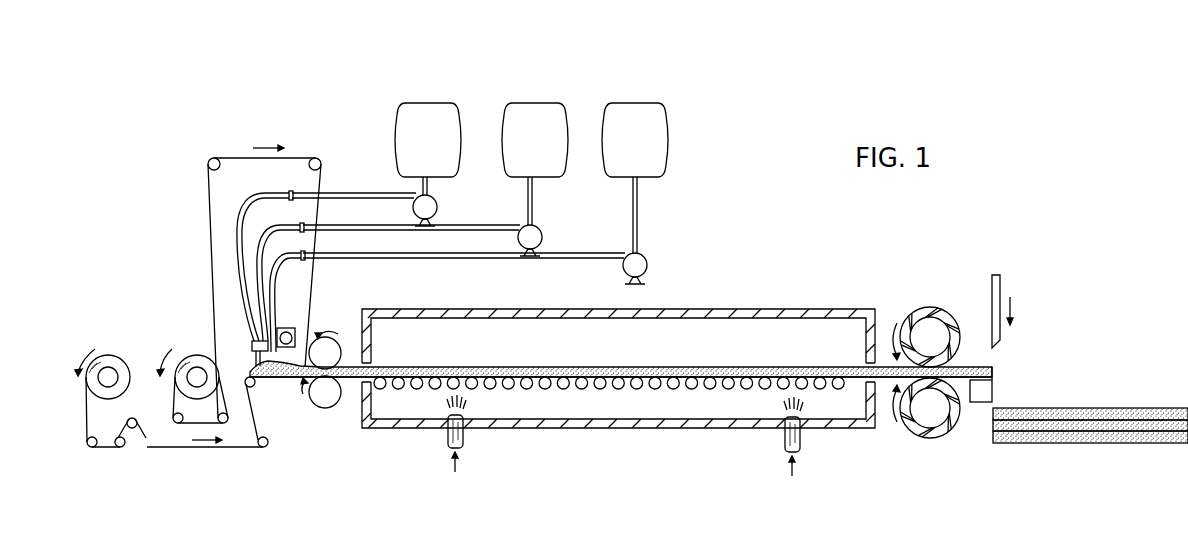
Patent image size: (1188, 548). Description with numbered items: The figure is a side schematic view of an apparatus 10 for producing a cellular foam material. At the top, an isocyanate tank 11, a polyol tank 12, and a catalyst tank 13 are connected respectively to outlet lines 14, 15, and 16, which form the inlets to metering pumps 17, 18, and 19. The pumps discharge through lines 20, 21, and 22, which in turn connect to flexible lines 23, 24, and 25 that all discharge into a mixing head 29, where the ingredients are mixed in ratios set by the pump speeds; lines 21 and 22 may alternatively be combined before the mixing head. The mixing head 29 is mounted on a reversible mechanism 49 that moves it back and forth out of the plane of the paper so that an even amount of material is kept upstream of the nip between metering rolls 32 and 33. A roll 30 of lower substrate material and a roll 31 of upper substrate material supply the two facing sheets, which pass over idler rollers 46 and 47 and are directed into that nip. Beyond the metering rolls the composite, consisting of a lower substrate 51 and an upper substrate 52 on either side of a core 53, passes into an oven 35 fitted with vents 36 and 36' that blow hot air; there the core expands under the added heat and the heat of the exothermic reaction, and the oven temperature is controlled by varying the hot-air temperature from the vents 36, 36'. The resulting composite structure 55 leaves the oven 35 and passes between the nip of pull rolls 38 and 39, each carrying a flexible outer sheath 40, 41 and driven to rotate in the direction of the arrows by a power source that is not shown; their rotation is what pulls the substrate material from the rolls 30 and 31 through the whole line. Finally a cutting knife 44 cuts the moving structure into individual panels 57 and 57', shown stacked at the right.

The apparatus 10 is at (723, 288).
The isocyanate tank 11 is at (452, 115).
The polyol tank 12 is at (559, 115).
The catalyst tank 13 is at (667, 115).
The outlet line 14 is at (428, 186).
The outlet line 15 is at (532, 190).
The outlet line 16 is at (637, 190).
The metering pump 17 is at (437, 208).
The metering pump 18 is at (541, 234).
The metering pump 19 is at (641, 253).
The line 20 is at (334, 195).
The line 21 is at (338, 226).
The line 22 is at (368, 254).
The flexible line 23 is at (259, 208).
The flexible line 24 is at (272, 236).
The flexible line 25 is at (295, 256).
The mixing head 29 is at (252, 347).
The roll of lower substrate material 30 is at (122, 356).
The roll of upper substrate material 31 is at (188, 356).
The metering roll 32 is at (340, 332).
The metering roll 33 is at (338, 405).
The oven 35 is at (782, 310).
The vent 36 is at (476, 433).
The vent 36' is at (814, 436).
The pull roll 38 is at (930, 330).
The pull roll 39 is at (927, 418).
The flexible outer sheath 40 is at (949, 325).
The flexible outer sheath 41 is at (950, 428).
The cutting knife 44 is at (1002, 291).
The idler roller 46 is at (96, 436).
The idler roller 47 is at (135, 418).
The reversible mechanism 49 is at (287, 330).
The lower substrate 51 is at (426, 388).
The upper substrate 52 is at (399, 367).
The core 53 is at (500, 366).
The composite structure 55 is at (882, 362).
The panel 57 is at (1090, 401).
The panel 57' is at (1090, 450).